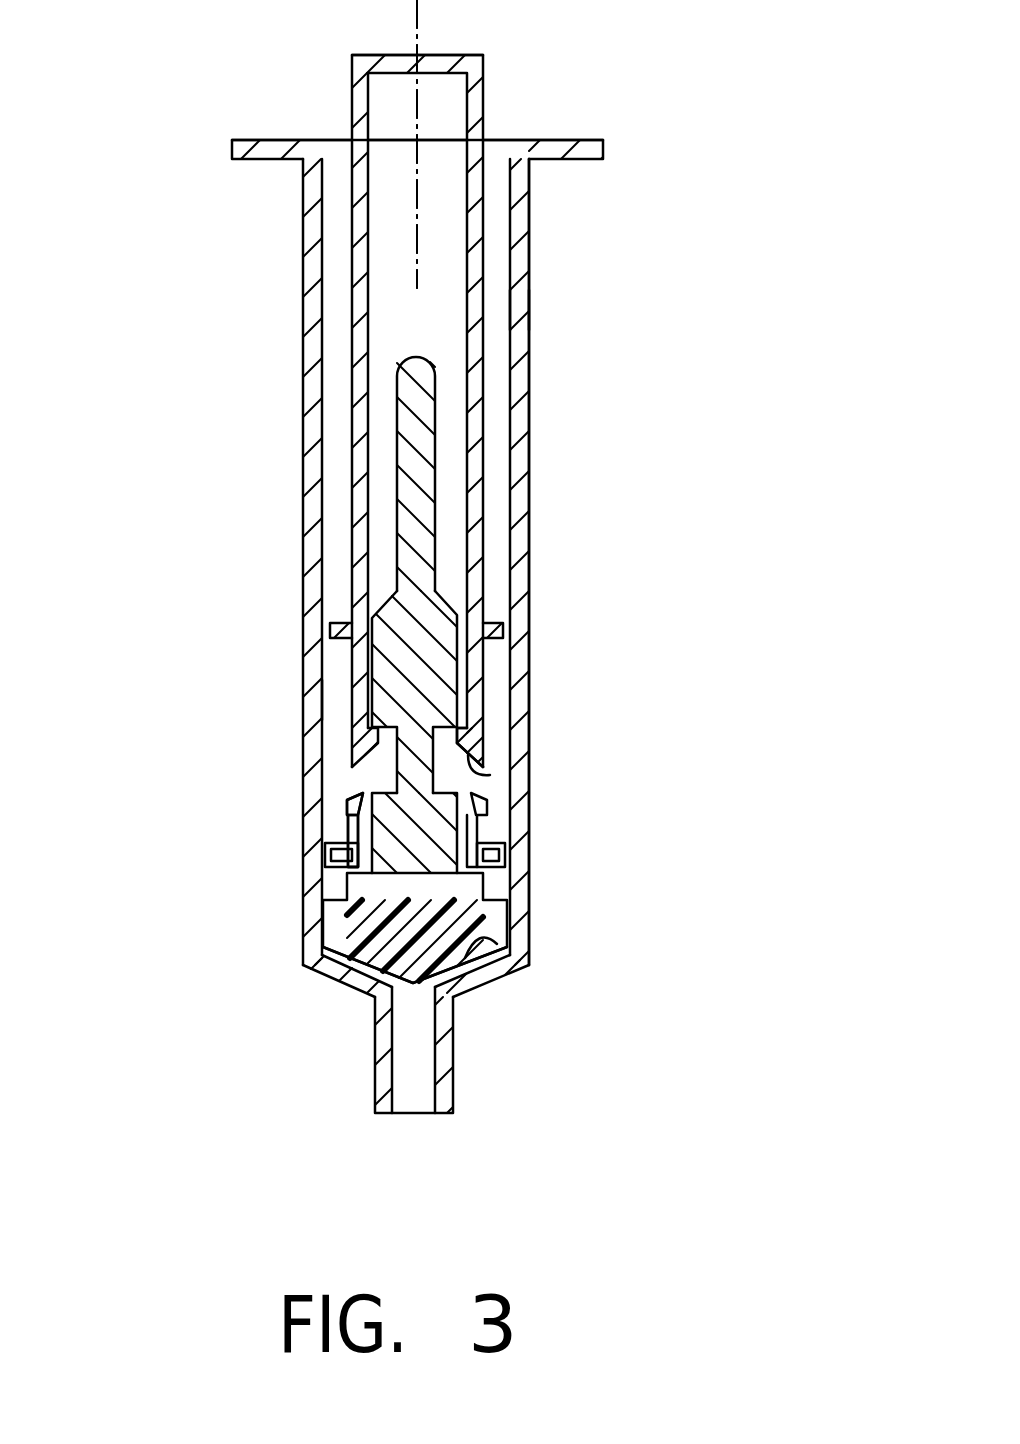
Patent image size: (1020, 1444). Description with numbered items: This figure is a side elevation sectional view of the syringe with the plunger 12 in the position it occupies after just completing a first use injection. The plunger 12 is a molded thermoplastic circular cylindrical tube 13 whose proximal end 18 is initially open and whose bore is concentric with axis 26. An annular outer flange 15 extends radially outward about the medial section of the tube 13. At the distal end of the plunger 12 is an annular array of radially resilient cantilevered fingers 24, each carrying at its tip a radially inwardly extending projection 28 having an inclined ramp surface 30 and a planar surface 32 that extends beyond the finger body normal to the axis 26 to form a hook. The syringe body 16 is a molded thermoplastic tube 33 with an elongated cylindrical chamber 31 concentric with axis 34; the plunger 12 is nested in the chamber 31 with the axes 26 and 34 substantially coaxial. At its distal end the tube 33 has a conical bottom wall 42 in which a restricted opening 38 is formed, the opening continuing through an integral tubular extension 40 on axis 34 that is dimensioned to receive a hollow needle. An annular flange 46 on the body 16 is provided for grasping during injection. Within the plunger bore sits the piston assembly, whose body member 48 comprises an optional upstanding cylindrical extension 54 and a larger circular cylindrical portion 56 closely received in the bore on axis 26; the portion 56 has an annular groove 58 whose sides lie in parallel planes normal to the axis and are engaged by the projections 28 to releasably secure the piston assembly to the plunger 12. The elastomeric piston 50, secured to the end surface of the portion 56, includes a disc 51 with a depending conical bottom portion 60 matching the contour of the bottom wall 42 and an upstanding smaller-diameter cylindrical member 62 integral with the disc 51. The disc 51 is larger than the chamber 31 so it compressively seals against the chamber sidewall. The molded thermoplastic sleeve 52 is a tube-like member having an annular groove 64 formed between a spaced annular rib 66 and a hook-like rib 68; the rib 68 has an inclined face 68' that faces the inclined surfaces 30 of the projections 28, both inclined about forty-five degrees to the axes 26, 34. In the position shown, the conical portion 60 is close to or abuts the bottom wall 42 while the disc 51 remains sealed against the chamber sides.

The plunger 12 is at (583, 83).
The tube 13 is at (487, 243).
The outer flange 15 is at (340, 618).
The syringe body 16 is at (633, 336).
The proximal end 18 is at (438, 53).
The cantilevered fingers 24 is at (357, 693).
The axis 26 is at (413, 32).
The projection 28 is at (448, 746).
The surface 30 is at (483, 755).
The chamber 31 is at (503, 316).
The planar surface 32 is at (313, 700).
The tube 33 is at (530, 437).
The axis 34 is at (413, 32).
The opening 38 is at (414, 1078).
The tubular extension 40 is at (373, 1067).
The conical bottom wall 42 is at (495, 985).
The annular flange 46 is at (603, 150).
The body member 48 is at (437, 627).
The elastomeric piston 50 is at (482, 945).
The elastomeric disc 51 is at (373, 925).
The sleeve 52 is at (333, 812).
The cylindrical extension 54 is at (415, 405).
The circular cylindrical portion 56 is at (430, 848).
The annular groove 58 is at (473, 713).
The conical bottom portion 60 is at (385, 955).
The circular cylindrical member 62 is at (345, 880).
The annular groove 64 is at (345, 825).
The annular rib 66 is at (348, 855).
The hook-like rib 68 is at (596, 819).
The inclined face 68' is at (596, 796).